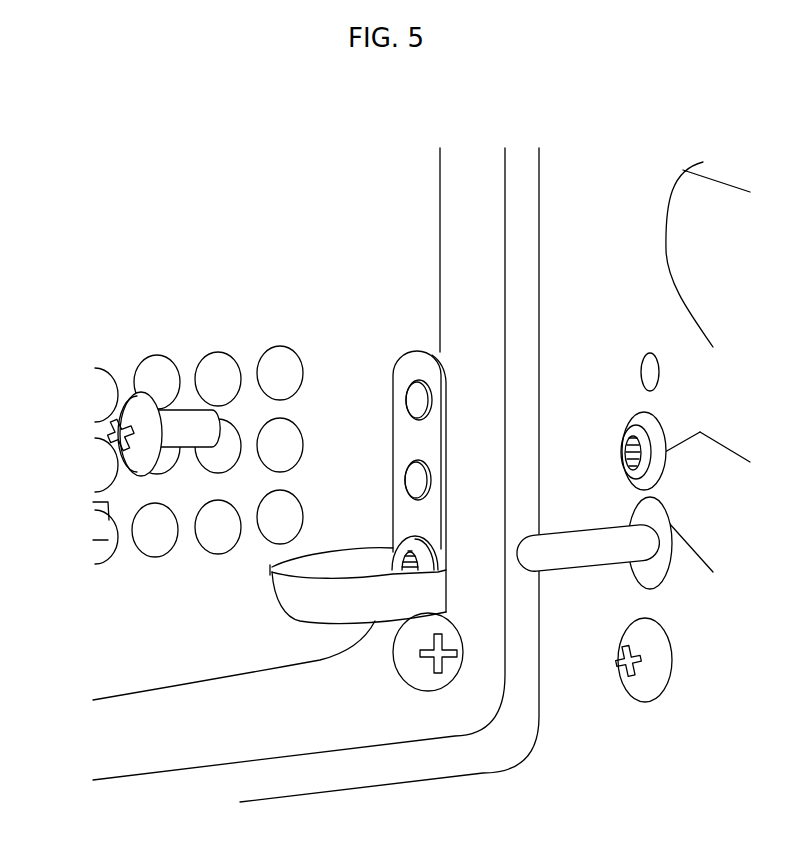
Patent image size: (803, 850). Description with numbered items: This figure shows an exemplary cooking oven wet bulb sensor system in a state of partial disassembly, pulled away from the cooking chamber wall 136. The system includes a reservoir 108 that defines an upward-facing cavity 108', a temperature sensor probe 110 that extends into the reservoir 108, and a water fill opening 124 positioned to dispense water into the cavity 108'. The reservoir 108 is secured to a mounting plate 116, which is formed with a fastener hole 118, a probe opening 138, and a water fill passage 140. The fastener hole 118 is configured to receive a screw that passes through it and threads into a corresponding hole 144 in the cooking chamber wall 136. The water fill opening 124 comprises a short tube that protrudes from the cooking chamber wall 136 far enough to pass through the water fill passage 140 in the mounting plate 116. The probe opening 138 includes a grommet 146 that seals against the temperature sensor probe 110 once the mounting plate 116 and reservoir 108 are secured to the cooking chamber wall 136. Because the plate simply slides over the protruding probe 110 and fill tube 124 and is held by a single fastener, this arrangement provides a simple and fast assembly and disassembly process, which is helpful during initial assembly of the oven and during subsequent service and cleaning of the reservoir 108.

The reservoir 108 is at (320, 612).
The cavity 108' is at (358, 527).
The temperature sensing probe 110 is at (573, 553).
The mounting plate 116 is at (417, 352).
The fastener hole 118 is at (407, 392).
The water fill opening 124 is at (647, 442).
The cooking chamber wall 136 is at (586, 209).
The probe opening 138 is at (398, 560).
The water fill passage 140 is at (407, 485).
The hole 144 is at (643, 367).
The grommet 146 is at (402, 563).